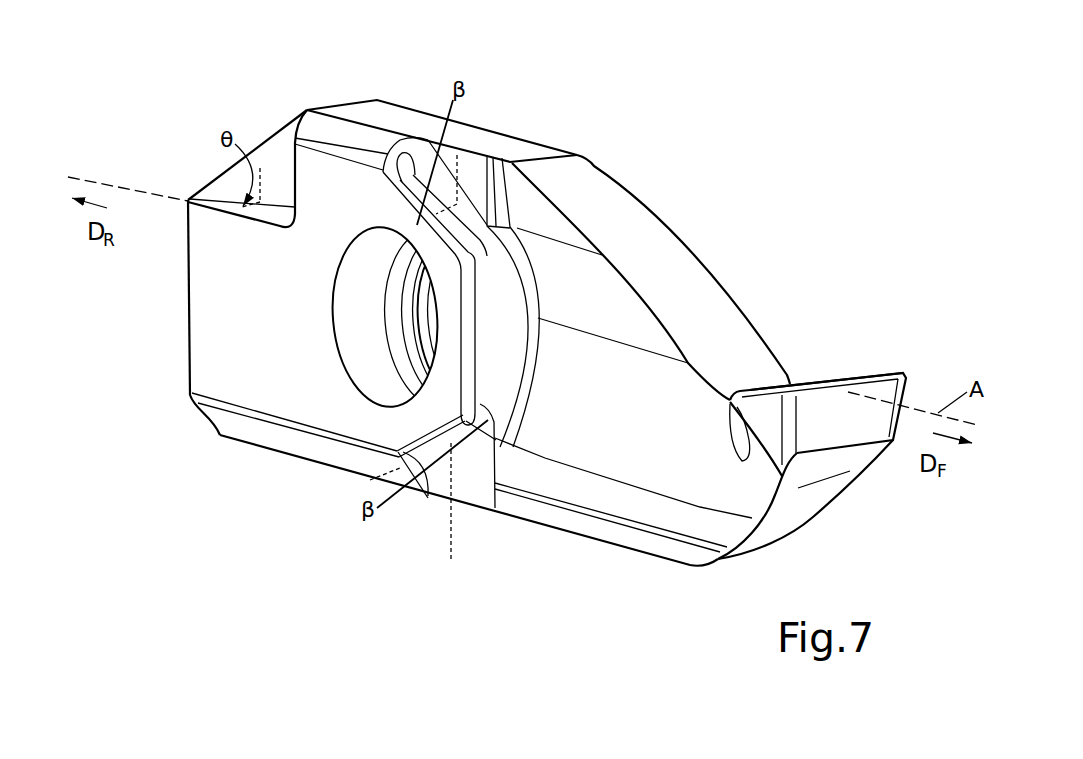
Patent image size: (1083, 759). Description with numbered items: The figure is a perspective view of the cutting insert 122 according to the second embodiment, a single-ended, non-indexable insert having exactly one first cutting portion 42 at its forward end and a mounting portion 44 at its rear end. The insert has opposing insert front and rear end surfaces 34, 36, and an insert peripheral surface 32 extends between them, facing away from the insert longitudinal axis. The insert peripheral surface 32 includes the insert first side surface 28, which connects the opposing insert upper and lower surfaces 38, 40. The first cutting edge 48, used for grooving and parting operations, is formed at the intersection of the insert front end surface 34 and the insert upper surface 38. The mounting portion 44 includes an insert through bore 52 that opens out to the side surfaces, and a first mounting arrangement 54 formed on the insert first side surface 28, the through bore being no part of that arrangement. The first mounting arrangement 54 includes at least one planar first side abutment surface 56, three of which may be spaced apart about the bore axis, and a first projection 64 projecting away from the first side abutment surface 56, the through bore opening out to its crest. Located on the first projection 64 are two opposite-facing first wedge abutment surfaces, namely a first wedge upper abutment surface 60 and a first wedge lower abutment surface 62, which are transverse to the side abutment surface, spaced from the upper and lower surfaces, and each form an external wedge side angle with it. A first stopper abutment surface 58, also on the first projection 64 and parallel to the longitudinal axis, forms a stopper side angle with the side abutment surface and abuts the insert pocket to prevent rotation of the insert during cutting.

The cutting insert 122 is at (728, 157).
The insert first side surface 28 is at (292, 308).
The insert peripheral surface 32 is at (593, 203).
The insert front end surface 34 is at (842, 418).
The insert rear end surface 36 is at (177, 348).
The insert upper surface 38 is at (377, 112).
The insert lower surface 40 is at (293, 480).
The first cutting portion 42 is at (872, 338).
The mounting portion 44 is at (310, 408).
The first cutting edge 48 is at (812, 390).
The insert through bore 52 is at (362, 348).
The first mounting arrangement 54 is at (327, 166).
The first side abutment surface 56 is at (285, 166).
The first stopper abutment surface 58 is at (220, 197).
The first wedge upper abutment surface 60 is at (418, 224).
The first wedge lower abutment surface 62 is at (468, 422).
The first projection 64 is at (225, 263).